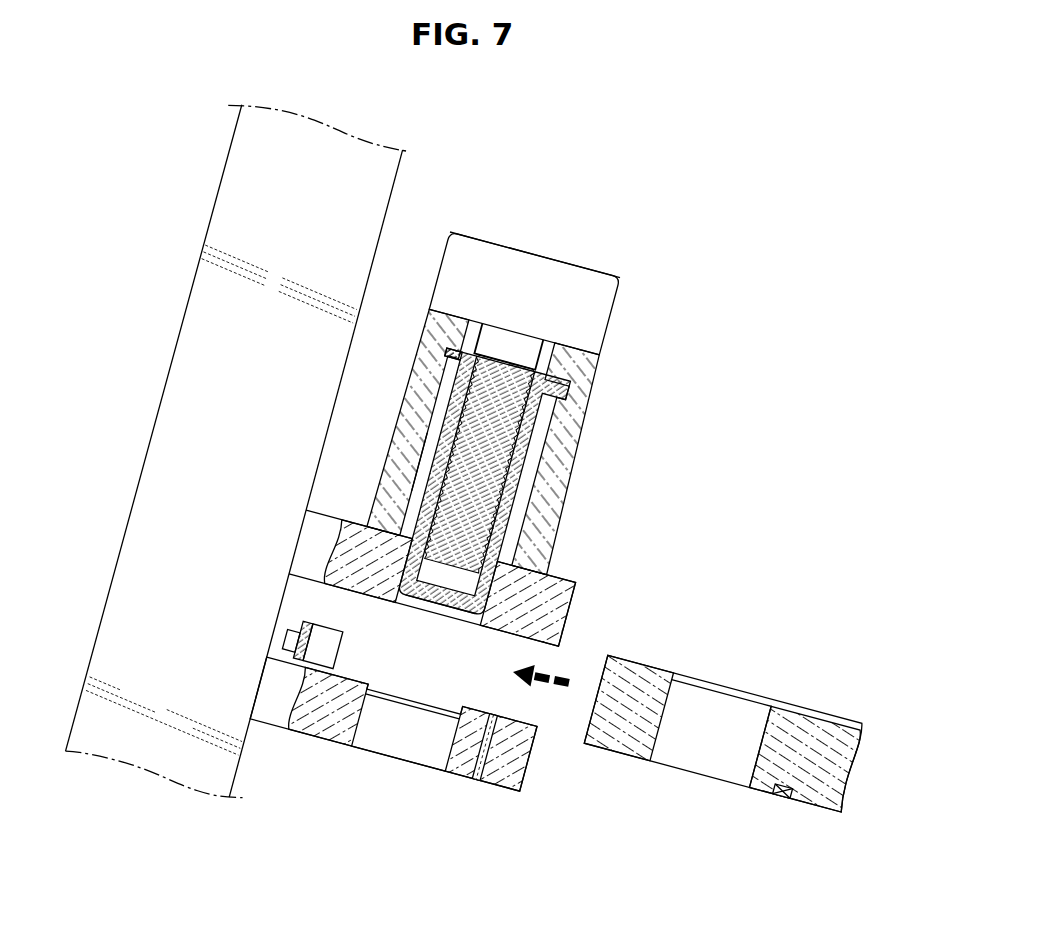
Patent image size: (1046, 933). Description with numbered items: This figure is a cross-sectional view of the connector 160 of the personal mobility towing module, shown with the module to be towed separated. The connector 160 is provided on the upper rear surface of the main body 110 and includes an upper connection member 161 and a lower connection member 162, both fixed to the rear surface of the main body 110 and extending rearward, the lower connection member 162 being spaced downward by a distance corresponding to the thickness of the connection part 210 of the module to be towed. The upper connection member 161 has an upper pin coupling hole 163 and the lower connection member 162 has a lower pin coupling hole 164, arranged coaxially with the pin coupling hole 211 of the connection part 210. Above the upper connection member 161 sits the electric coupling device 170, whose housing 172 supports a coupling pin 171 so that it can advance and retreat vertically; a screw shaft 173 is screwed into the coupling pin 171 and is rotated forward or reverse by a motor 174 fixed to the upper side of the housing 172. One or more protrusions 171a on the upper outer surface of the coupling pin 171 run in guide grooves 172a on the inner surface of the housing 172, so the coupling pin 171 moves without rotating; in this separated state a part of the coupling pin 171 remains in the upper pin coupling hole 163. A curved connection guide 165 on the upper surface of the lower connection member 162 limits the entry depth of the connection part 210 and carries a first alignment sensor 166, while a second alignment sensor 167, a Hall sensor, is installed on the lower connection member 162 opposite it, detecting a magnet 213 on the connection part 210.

The main body 110 is at (230, 217).
The connector 160 is at (614, 571).
The upper connection member 161 is at (560, 614).
The lower connection member 162 is at (527, 767).
The upper pin coupling hole 163 is at (487, 618).
The lower pin coupling hole 164 is at (453, 757).
The connection guide 165 is at (308, 622).
The first alignment sensor 166 is at (297, 641).
The second alignment sensor 167 is at (478, 780).
The electric coupling device 170 is at (522, 233).
The coupling pin 171 is at (532, 447).
The protrusion 171a is at (446, 357).
The housing 172 is at (563, 487).
The guide groove 172a is at (418, 470).
The screw shaft 173 is at (493, 410).
The motor 174 is at (577, 278).
The connection part 210 is at (815, 722).
The pin coupling hole 211 is at (767, 722).
The magnet 213 is at (778, 796).